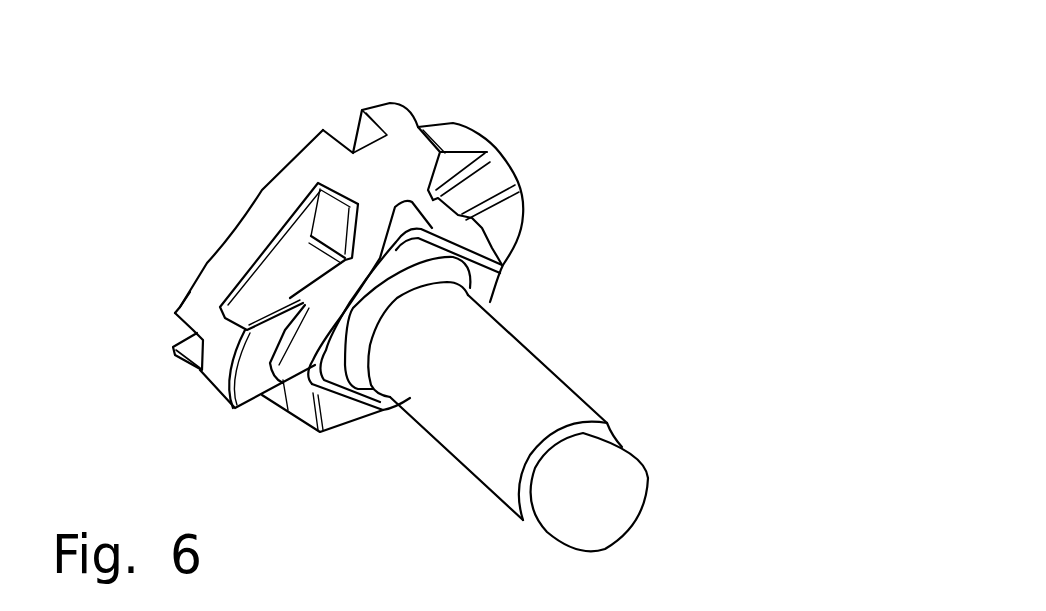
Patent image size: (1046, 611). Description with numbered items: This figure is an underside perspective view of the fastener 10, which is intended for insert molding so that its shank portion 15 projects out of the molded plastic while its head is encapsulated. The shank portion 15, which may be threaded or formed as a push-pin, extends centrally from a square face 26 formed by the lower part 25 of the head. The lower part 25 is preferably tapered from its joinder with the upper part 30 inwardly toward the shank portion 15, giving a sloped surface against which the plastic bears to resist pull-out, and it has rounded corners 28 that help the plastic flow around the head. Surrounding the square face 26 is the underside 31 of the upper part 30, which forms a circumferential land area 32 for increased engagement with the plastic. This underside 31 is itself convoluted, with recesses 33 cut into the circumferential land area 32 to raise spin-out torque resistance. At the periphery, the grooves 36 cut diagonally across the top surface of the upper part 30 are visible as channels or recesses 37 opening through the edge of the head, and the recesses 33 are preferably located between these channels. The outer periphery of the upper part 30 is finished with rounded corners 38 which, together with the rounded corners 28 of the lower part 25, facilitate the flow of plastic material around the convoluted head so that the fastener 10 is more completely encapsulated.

The fastener 10 is at (598, 138).
The shank portion 15 is at (570, 407).
The lower part 25 is at (386, 412).
The square face 26 is at (482, 296).
The rounded corners 28 is at (500, 267).
The upper part 30 is at (207, 263).
The underside 31 is at (507, 220).
The circumferential land area 32 is at (440, 155).
The recesses 33 is at (270, 240).
The grooves 36 is at (338, 133).
The channels or recesses 37 is at (348, 113).
The rounded corners 38 is at (180, 313).